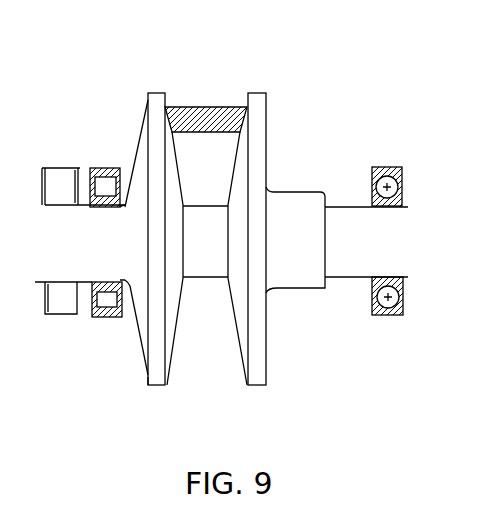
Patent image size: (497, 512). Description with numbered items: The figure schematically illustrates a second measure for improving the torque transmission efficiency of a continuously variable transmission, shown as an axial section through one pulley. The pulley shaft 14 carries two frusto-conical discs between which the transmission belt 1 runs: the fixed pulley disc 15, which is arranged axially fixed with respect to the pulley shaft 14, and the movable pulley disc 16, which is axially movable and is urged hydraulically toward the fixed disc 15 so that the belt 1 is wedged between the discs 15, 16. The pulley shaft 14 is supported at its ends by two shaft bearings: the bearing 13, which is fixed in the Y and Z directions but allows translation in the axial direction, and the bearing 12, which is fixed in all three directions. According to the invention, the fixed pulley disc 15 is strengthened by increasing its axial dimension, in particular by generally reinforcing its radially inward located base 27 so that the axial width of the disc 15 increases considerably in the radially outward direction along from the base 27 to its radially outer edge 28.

The transmission belt 1 is at (205, 107).
The bearing 12 is at (370, 170).
The bearing 13 is at (87, 170).
The pulley shaft 14 is at (96, 254).
The fixed pulley disc 15 is at (153, 130).
The movable pulley disc 16 is at (258, 140).
The base 27 is at (187, 300).
The radially outer edge 28 is at (146, 377).